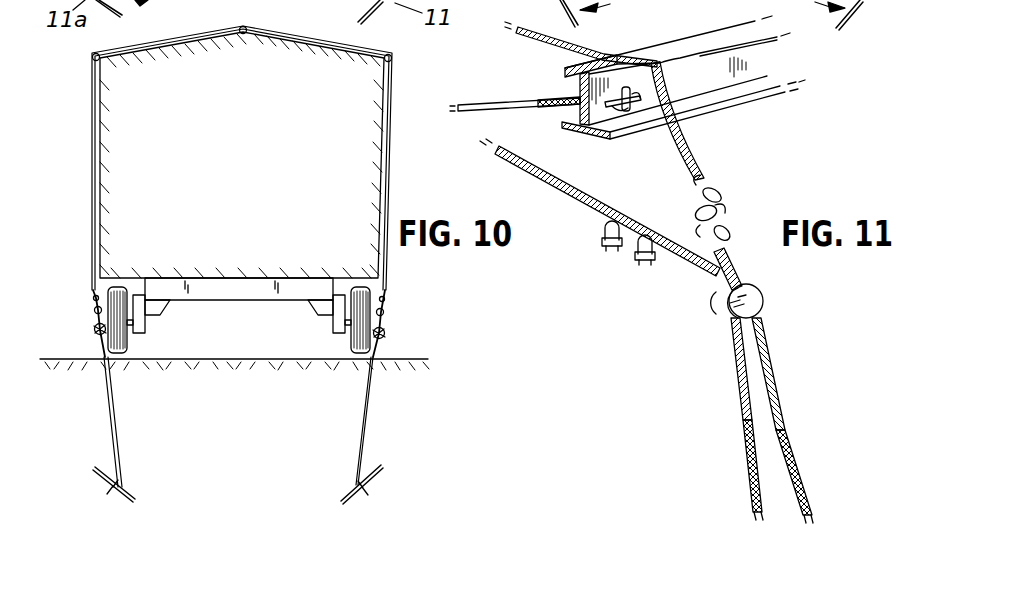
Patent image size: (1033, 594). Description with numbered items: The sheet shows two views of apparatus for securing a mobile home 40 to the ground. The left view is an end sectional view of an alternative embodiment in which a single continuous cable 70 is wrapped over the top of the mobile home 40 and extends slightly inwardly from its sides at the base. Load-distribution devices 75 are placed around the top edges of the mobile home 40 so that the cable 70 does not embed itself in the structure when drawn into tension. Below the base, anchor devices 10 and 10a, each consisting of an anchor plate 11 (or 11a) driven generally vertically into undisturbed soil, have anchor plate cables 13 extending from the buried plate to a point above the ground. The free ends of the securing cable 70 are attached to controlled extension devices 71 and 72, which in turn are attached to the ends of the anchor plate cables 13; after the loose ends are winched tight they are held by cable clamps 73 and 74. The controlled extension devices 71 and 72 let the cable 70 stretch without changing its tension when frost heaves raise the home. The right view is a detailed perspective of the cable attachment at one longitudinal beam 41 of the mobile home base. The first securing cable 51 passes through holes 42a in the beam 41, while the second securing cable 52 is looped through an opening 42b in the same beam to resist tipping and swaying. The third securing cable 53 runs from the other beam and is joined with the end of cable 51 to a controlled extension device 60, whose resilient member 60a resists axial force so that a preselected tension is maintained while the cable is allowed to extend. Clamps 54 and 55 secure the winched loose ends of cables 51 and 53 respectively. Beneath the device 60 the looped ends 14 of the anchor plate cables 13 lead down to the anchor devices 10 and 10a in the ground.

In FIG. 10, the anchor device 10 is at (343, 489).
In FIG. 10, the anchor device 10a is at (175, 478).
In FIG. 10, the anchor plate 11 is at (387, 485).
In FIG. 10, the ground anchor stake 11a is at (98, 479).
In FIG. 10, the anchor plate cable 13 is at (117, 408).
In FIG. 11, the anchor plate cable 13 is at (752, 508).
In FIG. 11, the looped ends 14 is at (742, 415).
In FIG. 10, the mobile home 40 is at (268, 171).
In FIG. 11, the longitudinal beam 41 is at (767, 72).
In FIG. 11, the holes 42a is at (652, 66).
In FIG. 11, the opening 42b is at (622, 118).
In FIG. 11, the first securing cable 51 is at (698, 145).
In FIG. 11, the second securing cable 52 is at (507, 106).
In FIG. 11, the third securing cable 53 is at (552, 192).
In FIG. 11, the clamp 54 is at (716, 243).
In FIG. 11, the clamp 55 is at (607, 243).
In FIG. 11, the controlled extension device 60 is at (764, 301).
In FIG. 11, the resilient member 60a is at (739, 300).
In FIG. 10, the cable 70 is at (91, 282).
In FIG. 10, the controlled extension device 71 is at (94, 329).
In FIG. 10, the controlled extension device 72 is at (385, 333).
In FIG. 10, the cable clamp 73 is at (94, 310).
In FIG. 10, the cable clamp 74 is at (384, 312).
In FIG. 10, the load-distribution device 75 is at (104, 60).